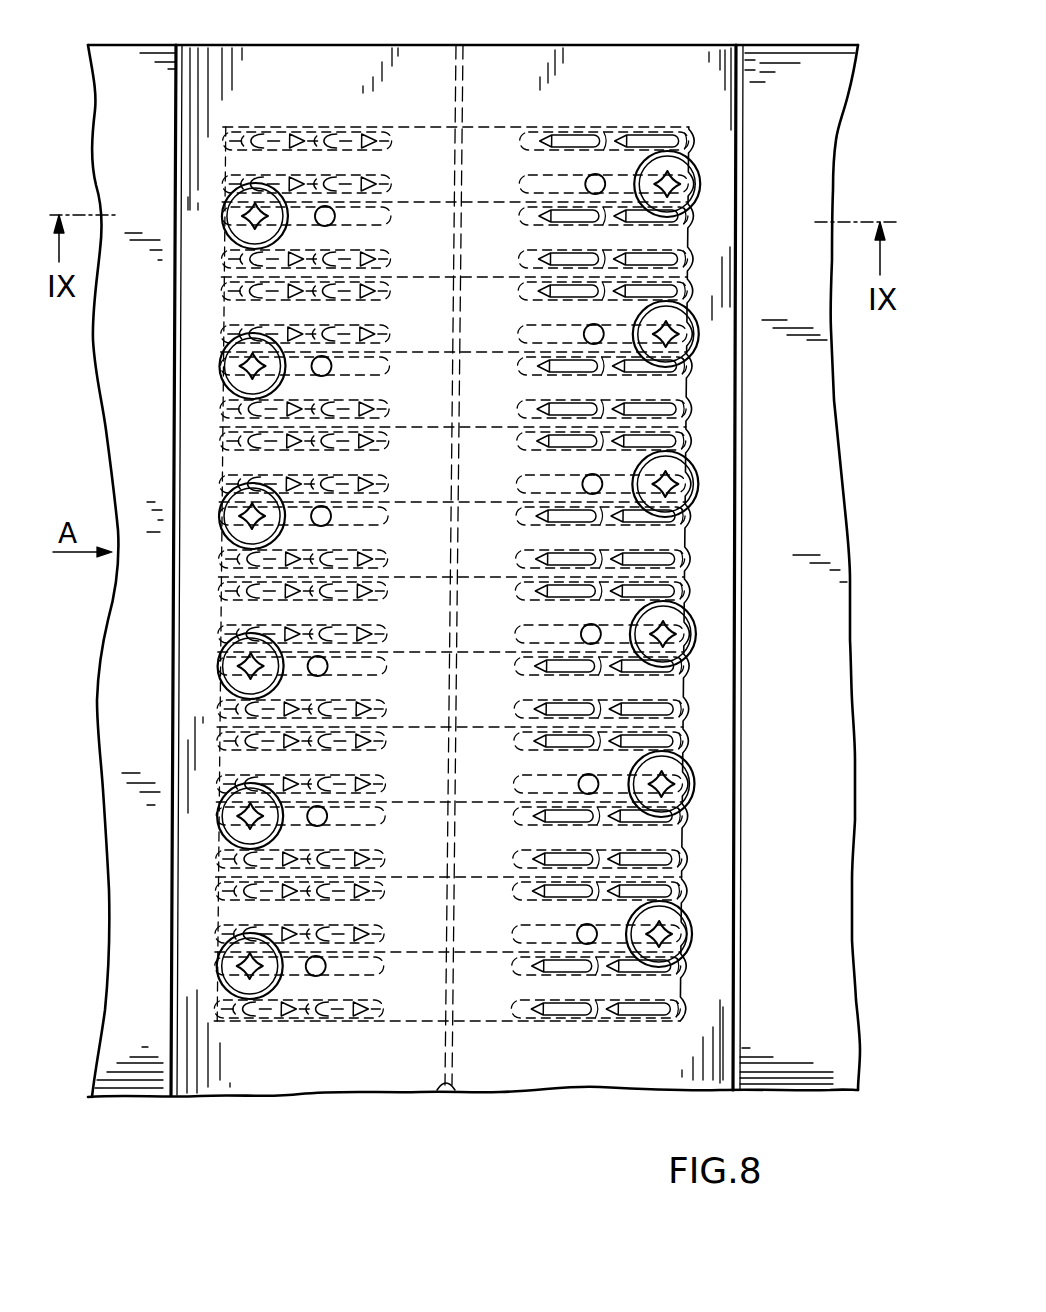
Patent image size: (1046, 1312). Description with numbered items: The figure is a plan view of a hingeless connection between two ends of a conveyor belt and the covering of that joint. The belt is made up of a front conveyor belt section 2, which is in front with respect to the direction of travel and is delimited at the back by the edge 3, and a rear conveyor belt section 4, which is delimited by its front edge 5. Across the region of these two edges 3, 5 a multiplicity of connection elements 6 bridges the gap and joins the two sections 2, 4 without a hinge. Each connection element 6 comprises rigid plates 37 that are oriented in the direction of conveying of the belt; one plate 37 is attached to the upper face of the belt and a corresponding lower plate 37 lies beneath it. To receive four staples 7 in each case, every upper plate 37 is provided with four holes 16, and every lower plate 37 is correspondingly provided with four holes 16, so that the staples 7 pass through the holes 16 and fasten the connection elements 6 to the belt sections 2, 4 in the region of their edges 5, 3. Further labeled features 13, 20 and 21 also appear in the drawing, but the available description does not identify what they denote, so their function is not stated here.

The front conveyor belt section 2 is at (820, 1070).
The edge 3 is at (457, 1085).
The rear conveyor belt section 4 is at (120, 1085).
The front edge 5 is at (440, 1087).
The connection elements 6 is at (383, 1040).
The staples 7 is at (225, 630).
The contact elements 13 is at (648, 553).
The holes 16 is at (680, 138).
The scalloped edge 20 is at (709, 600).
The fastening screws 21 is at (690, 470).
The rigid plates 37 is at (495, 143).